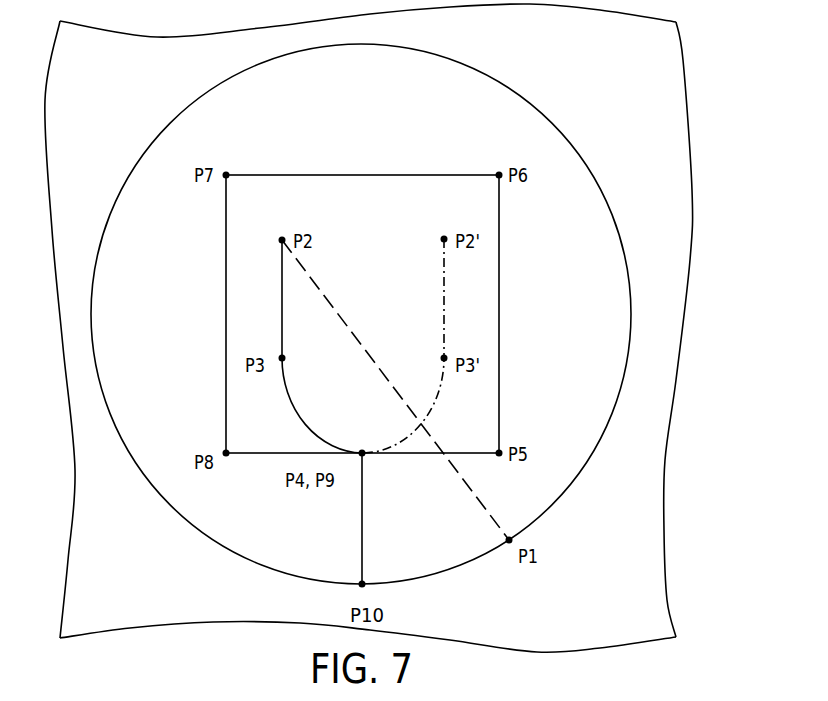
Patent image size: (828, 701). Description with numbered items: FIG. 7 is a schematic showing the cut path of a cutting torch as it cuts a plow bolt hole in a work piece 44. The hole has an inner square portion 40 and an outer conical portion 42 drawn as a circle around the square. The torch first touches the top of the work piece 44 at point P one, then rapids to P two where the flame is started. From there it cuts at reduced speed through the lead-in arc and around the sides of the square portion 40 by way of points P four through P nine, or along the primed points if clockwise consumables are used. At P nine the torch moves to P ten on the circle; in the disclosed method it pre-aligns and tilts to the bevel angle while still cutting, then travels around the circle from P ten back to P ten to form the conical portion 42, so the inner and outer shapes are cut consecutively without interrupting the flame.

The square portion 40 is at (369, 175).
The conical portion 42 is at (622, 267).
The work piece 44 is at (698, 160).